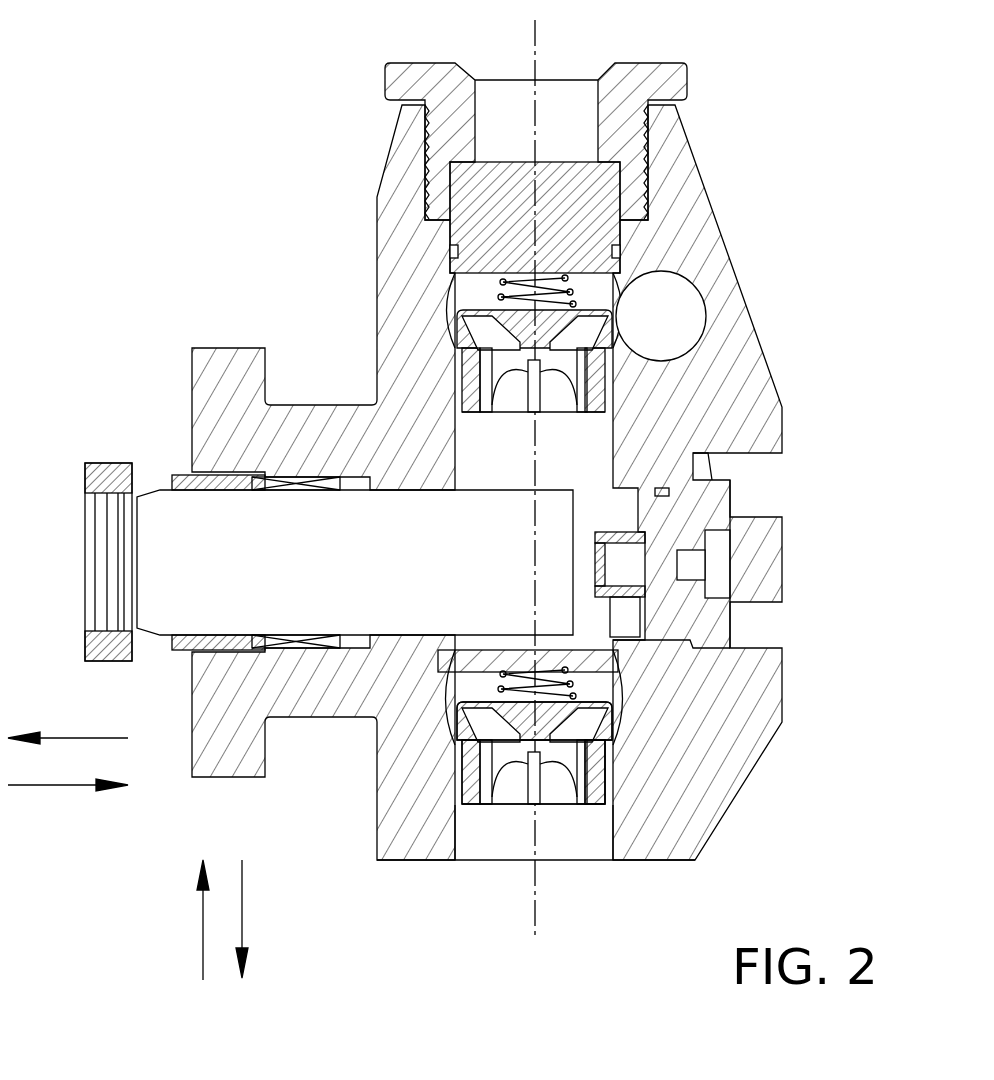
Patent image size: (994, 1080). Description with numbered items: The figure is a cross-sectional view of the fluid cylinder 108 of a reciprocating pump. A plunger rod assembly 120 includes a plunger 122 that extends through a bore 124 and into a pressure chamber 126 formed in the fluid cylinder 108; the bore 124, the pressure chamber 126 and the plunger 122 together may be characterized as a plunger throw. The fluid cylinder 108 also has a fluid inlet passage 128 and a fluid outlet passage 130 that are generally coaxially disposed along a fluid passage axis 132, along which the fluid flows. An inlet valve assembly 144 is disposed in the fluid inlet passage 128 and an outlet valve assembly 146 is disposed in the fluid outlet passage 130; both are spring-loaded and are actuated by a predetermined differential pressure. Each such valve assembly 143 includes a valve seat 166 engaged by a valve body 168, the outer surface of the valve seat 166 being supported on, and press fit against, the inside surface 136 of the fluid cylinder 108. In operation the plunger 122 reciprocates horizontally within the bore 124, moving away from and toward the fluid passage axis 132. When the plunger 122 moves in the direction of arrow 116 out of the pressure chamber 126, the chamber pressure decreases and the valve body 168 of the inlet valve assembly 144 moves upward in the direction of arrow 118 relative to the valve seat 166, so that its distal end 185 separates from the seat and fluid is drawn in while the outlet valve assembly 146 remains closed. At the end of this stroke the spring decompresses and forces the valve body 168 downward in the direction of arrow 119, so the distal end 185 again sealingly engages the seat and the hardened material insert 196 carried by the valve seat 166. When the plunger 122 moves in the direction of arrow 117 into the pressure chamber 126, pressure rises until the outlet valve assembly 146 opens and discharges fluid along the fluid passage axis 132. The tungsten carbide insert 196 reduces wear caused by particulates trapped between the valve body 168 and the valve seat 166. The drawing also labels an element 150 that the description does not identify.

The fluid cylinder 108 is at (767, 362).
The arrow 116 is at (107, 738).
The arrow 117 is at (37, 786).
The arrow 118 is at (203, 957).
The arrow 119 is at (242, 895).
The plunger rod assembly 120 is at (105, 462).
The plunger 122 is at (215, 539).
The bore 124 is at (380, 495).
The pressure chamber 126 is at (505, 479).
The fluid inlet passage 128 is at (447, 678).
The fluid outlet passage 130 is at (455, 285).
The fluid passage axis 132 is at (533, 928).
The inside surface 136 is at (458, 862).
The valve assembly 143 is at (622, 323).
The inlet valve assembly 144 is at (625, 658).
The outlet valve assembly 146 is at (607, 280).
The retainer 150 is at (675, 487).
The valve seat 166 is at (592, 797).
The valve body 168 is at (585, 700).
The distal end 185 is at (607, 785).
The insert 196 is at (465, 740).